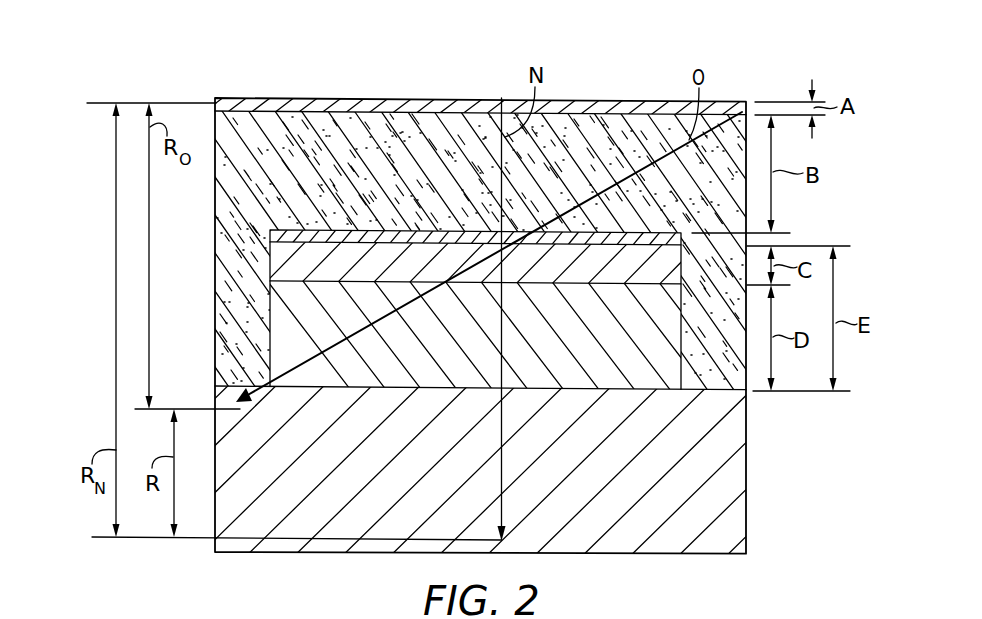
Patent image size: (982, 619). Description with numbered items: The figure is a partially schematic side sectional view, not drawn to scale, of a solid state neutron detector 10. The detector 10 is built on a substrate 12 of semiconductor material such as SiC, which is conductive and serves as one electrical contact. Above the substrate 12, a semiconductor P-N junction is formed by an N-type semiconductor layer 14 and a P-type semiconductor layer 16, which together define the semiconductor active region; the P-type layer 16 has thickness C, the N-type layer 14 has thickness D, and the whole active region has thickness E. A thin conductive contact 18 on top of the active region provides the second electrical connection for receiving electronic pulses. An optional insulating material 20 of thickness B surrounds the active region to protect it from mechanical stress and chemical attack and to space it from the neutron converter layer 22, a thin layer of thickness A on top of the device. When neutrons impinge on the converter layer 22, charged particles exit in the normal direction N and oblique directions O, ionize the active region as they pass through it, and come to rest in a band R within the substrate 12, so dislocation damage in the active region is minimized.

The neutron detector 10 is at (176, 75).
The substrate 12 is at (218, 470).
The N-type semiconductor layer 14 is at (283, 330).
The P-type semiconductor layer 16 is at (283, 263).
The conductive contact 18 is at (280, 233).
The insulating material 20 is at (215, 182).
The neutron converter layer 22 is at (296, 98).